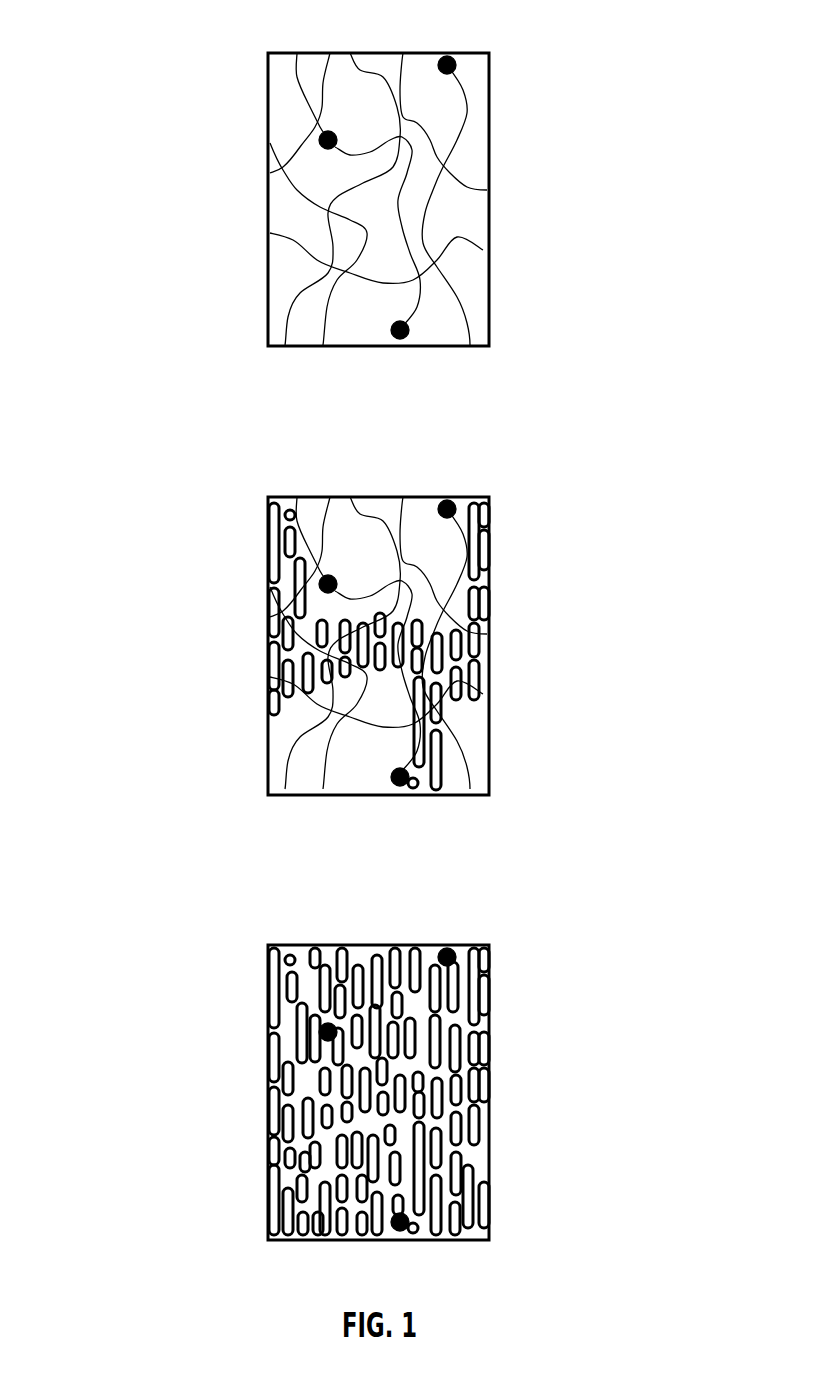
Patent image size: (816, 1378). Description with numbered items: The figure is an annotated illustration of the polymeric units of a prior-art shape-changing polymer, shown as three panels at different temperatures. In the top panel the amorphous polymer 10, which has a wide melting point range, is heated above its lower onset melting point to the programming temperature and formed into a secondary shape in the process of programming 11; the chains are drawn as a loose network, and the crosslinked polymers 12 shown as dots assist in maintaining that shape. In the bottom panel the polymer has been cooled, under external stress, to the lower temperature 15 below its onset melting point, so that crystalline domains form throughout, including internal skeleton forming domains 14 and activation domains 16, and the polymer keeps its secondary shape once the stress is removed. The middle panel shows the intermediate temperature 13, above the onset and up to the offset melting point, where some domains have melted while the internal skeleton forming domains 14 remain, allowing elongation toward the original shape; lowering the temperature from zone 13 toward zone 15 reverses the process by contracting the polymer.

The amorphous polymer 10 is at (102, 30).
The programming 11 is at (224, 102).
The crosslinked polymers 12 is at (402, 336).
The intermediate temperature zone 13 is at (222, 543).
The internal skeleton forming domains 14 is at (286, 666).
The lower temperature zone 15 is at (222, 985).
The activation domains 16 is at (286, 1193).